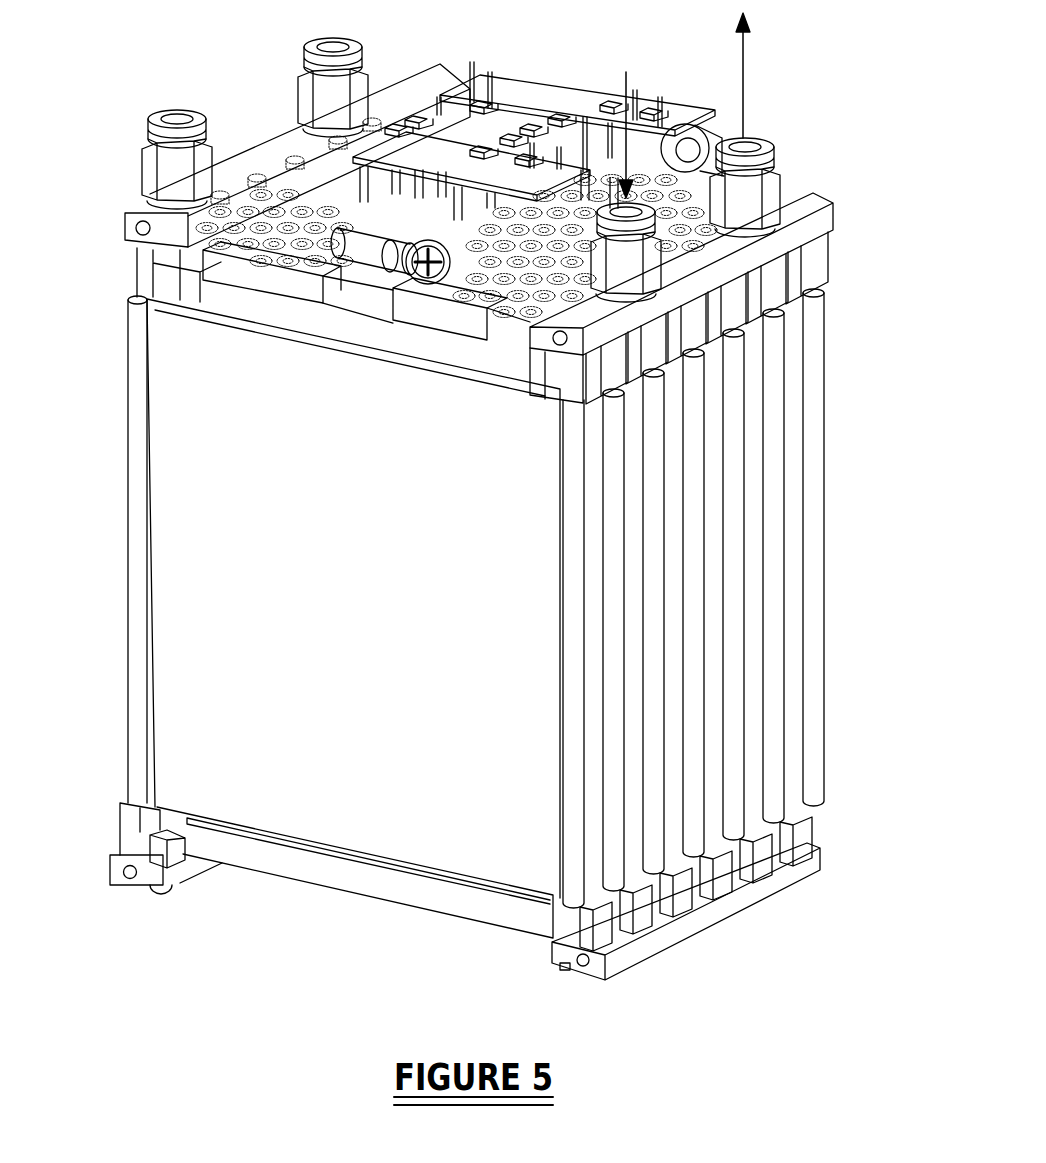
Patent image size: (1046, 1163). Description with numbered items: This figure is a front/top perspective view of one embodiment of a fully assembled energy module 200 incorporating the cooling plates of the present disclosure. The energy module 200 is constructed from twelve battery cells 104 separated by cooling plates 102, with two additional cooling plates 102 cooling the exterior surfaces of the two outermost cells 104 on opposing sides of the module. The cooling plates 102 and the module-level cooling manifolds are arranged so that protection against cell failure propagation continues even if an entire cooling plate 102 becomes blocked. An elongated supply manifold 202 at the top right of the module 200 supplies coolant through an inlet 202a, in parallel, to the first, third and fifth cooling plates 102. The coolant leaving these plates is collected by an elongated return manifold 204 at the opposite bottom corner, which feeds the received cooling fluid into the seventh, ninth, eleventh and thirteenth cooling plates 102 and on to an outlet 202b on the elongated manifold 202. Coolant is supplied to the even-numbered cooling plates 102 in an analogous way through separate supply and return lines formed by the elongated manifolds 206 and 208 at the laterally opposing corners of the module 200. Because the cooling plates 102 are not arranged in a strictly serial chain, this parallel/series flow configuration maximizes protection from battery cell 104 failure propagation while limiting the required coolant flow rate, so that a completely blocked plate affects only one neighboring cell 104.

The energy module 200 is at (184, 74).
The cooling plate 102 is at (185, 590).
The battery cell 104 is at (240, 300).
The elongated supply manifold 202 is at (817, 205).
The inlet 202a is at (653, 267).
The outlet 202b is at (773, 190).
The elongated return manifold 204 is at (117, 872).
The elongated manifold 206 is at (143, 208).
The elongated manifold 208 is at (640, 945).